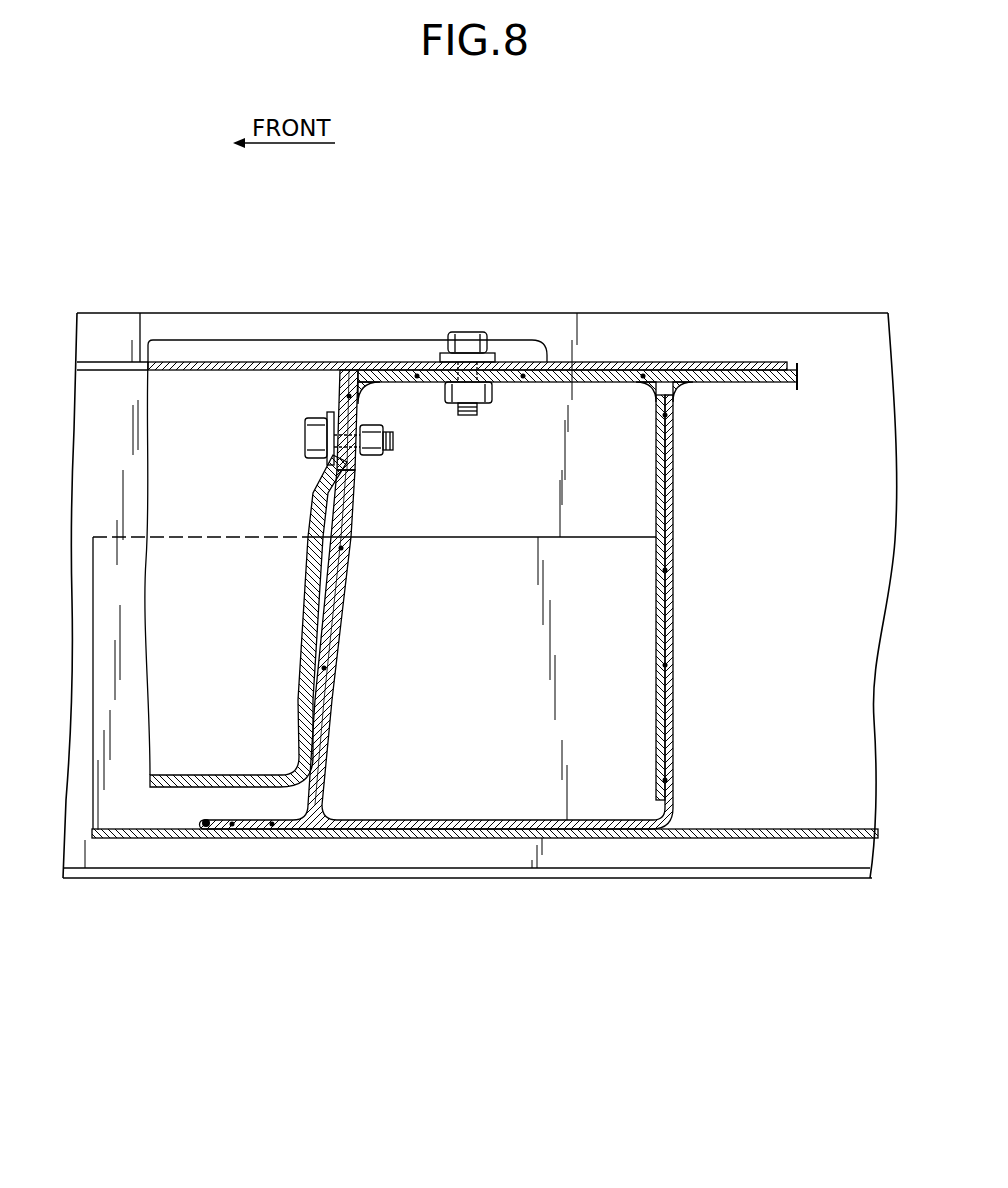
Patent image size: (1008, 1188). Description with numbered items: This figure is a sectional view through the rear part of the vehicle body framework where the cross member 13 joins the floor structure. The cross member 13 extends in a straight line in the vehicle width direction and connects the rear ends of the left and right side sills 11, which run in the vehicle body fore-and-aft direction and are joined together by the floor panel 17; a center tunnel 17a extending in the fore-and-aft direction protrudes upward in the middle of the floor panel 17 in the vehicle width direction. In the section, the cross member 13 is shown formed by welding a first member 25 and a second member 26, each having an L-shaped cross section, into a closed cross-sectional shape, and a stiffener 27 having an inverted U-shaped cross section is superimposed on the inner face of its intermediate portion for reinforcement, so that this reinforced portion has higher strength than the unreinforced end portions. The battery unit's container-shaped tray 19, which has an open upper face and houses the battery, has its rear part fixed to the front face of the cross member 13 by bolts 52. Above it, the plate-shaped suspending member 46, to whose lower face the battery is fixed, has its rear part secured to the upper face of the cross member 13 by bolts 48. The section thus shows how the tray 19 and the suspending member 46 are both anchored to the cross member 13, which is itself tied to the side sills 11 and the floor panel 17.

The side sill 11 is at (108, 395).
The cross member 13 is at (615, 355).
The floor panel 17 is at (173, 846).
The center tunnel 17a is at (427, 537).
The tray 19 is at (340, 393).
The first member 25 is at (322, 585).
The second member 26 is at (676, 570).
The stiffener 27 is at (347, 638).
The suspending member 46 is at (232, 362).
The bolt 48 is at (467, 340).
The bolt 52 is at (305, 437).